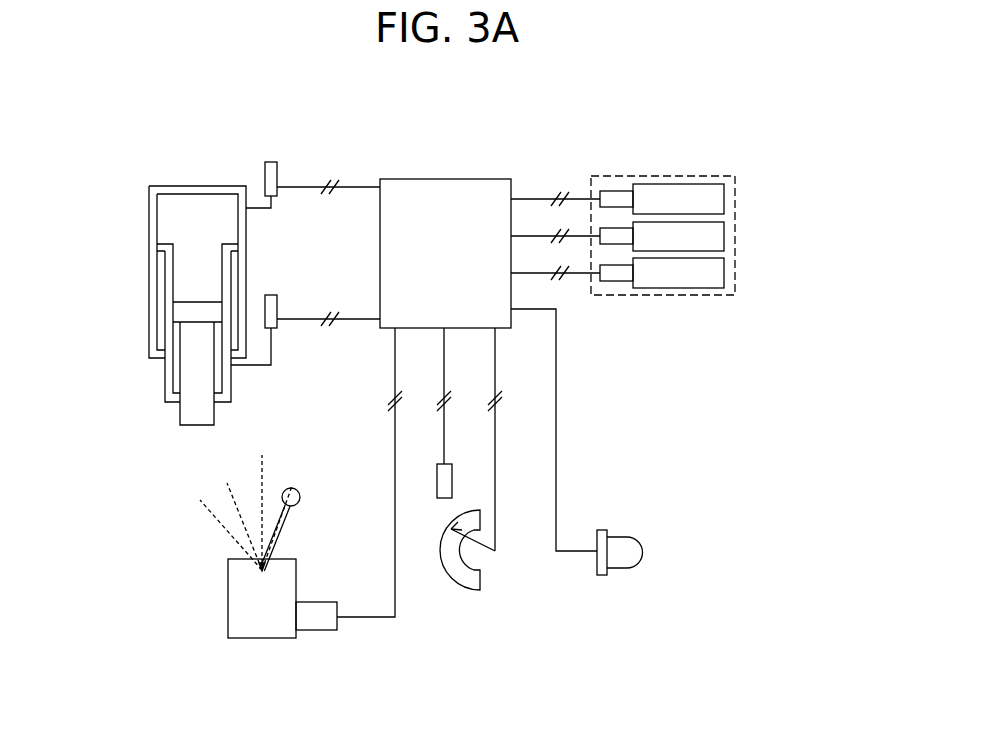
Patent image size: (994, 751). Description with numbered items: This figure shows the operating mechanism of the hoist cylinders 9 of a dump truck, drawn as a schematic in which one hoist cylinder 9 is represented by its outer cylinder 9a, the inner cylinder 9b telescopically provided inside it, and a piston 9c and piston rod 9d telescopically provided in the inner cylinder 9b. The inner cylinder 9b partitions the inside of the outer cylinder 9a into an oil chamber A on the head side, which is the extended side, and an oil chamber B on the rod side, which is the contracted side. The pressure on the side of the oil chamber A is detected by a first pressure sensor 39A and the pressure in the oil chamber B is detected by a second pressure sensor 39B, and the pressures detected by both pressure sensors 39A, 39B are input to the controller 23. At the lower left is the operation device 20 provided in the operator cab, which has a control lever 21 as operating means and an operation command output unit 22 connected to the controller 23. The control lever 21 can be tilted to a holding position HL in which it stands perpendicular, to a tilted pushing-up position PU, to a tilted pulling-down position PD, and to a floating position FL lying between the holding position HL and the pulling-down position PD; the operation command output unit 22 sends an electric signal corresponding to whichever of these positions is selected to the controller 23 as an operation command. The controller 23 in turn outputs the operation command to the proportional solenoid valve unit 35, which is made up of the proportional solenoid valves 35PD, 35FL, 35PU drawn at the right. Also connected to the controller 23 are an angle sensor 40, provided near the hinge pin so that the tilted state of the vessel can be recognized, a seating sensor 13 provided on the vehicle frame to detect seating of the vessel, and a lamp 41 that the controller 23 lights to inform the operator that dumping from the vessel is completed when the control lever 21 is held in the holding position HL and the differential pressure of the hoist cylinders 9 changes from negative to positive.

The hoist cylinder 9 is at (191, 181).
The outer cylinder 9a is at (149, 208).
The inner cylinder 9b is at (165, 285).
The piston 9c is at (177, 312).
The piston rod 9d is at (193, 407).
The oil chamber on the head side A is at (165, 236).
The oil chamber on the rod side B is at (178, 378).
The pressure sensor 39A is at (272, 162).
The pressure sensor 39B is at (272, 295).
The controller 23 is at (437, 179).
The proportional solenoid valve unit 35 is at (645, 175).
The proportional solenoid valve 35PD is at (665, 184).
The proportional solenoid valve 35FL is at (724, 237).
The proportional solenoid valve 35PU is at (662, 288).
The seating sensor 13 is at (437, 482).
The angle sensor 40 is at (468, 580).
The lamp 41 is at (627, 560).
The operation device 20 is at (260, 630).
The control lever 21 is at (282, 533).
The operation command output unit 22 is at (337, 625).
The pulling-down position PD is at (194, 516).
The floating position FL is at (230, 505).
The holding position HL is at (268, 493).
The pushing-up position PU is at (305, 506).